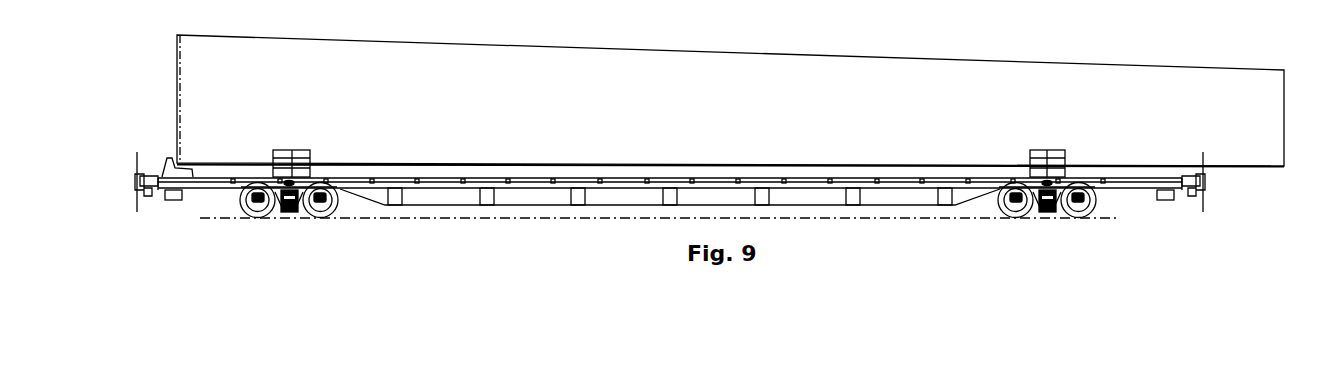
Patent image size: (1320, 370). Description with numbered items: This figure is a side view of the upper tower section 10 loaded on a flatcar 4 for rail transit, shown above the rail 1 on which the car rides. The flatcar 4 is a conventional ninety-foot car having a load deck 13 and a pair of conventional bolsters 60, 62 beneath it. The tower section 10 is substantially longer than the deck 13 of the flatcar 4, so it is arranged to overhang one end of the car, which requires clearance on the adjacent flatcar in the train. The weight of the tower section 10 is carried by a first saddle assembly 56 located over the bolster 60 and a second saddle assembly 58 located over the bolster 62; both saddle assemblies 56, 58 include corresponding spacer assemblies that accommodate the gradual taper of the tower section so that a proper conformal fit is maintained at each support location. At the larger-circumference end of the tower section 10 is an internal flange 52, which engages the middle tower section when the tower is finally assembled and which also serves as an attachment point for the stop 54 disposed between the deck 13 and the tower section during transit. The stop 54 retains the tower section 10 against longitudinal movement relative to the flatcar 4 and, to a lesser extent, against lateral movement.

The rail 1 is at (823, 218).
The flatcar 4 is at (463, 205).
The upper tower section 10 is at (645, 50).
The load deck 13 is at (820, 188).
The internal flange 52 is at (177, 102).
The stop 54 is at (167, 163).
The first saddle assembly 56 is at (300, 150).
The second saddle assembly 58 is at (1031, 151).
The bolster 60 is at (297, 207).
The bolster 62 is at (1044, 207).